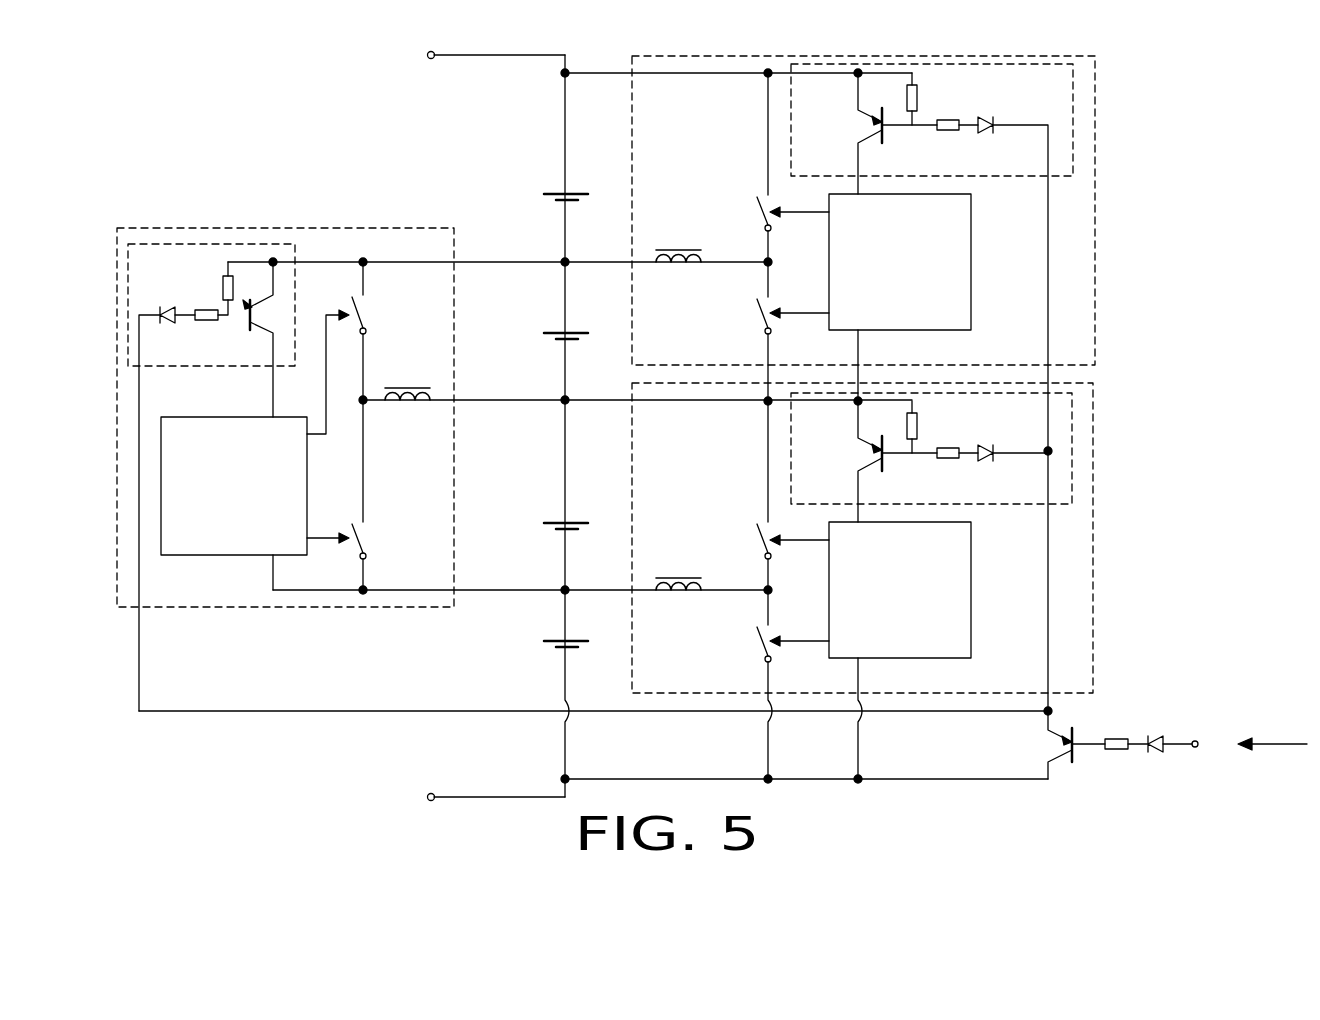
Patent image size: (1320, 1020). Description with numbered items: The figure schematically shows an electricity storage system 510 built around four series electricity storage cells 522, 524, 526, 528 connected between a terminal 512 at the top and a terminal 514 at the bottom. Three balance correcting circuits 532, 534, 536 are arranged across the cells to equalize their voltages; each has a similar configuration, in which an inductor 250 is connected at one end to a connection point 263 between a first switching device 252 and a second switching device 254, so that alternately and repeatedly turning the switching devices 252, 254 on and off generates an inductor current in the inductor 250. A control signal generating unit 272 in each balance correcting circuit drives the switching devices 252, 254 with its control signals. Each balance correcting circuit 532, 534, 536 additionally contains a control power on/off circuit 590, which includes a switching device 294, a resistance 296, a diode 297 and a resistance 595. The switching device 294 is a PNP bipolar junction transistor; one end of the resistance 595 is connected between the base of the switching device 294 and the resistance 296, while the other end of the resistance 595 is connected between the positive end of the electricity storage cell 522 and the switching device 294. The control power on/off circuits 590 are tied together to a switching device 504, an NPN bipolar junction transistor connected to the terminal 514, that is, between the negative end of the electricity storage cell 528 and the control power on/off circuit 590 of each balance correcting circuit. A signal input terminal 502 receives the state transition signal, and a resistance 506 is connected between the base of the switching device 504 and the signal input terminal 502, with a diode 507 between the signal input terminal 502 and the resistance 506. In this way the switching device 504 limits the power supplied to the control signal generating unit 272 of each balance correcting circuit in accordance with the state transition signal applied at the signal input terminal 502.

The electricity storage system 510 is at (180, 87).
The terminal 512 is at (428, 60).
The terminal 514 is at (428, 794).
The electricity storage cell 522 is at (549, 189).
The electricity storage cell 524 is at (549, 326).
The electricity storage cell 526 is at (549, 515).
The electricity storage cell 528 is at (543, 648).
The balance correcting circuit 532 is at (1095, 140).
The balance correcting circuit 534 is at (250, 608).
The balance correcting circuit 536 is at (1093, 470).
The inductor 250 is at (418, 408).
The switching device 252 is at (372, 318).
The switching device 254 is at (372, 542).
The connection point 263 is at (372, 394).
The control signal generating unit 272 is at (209, 558).
The switching device 294 is at (852, 130).
The resistance 296 is at (946, 132).
The diode 297 is at (984, 132).
The control power on/off circuit 590 is at (188, 368).
The resistance 595 is at (919, 97).
The signal input terminal 502 is at (1196, 750).
The switching device 504 is at (1046, 750).
The resistance 506 is at (1112, 738).
The diode 507 is at (1182, 724).